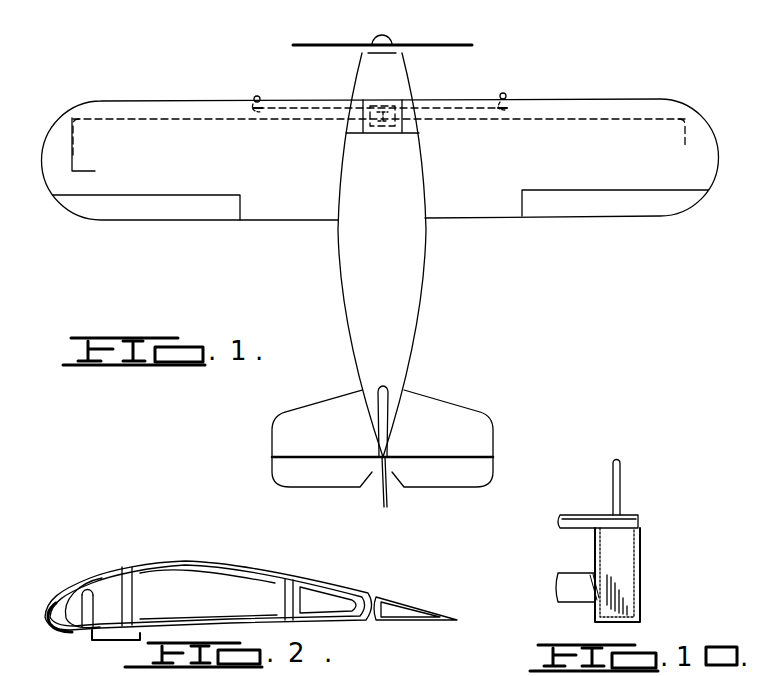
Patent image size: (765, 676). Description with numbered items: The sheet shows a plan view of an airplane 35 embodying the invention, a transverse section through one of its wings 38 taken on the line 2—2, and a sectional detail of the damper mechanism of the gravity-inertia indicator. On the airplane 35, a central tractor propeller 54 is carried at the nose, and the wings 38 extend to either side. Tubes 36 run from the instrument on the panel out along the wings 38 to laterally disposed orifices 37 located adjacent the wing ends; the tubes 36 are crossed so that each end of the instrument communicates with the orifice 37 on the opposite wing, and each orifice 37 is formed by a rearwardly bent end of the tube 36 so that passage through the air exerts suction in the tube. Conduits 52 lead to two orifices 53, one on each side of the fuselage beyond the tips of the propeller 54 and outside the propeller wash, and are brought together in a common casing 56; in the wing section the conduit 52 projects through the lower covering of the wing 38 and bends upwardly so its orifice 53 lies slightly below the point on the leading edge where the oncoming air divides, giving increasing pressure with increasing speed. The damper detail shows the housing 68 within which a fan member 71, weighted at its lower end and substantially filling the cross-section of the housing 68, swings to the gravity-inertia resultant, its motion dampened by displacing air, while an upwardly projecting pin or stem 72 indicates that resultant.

In FIG. 1, the section line 2— 2 is at (217, 63).
In FIG. 1, the airplane 35 is at (382, 280).
In FIG. 1, the tubes 36 is at (215, 124).
In FIG. 2, the tubes 36 is at (102, 580).
In FIG. 1, the orifices 37 is at (82, 157).
In FIG. 2, the orifices 37 is at (137, 640).
In FIG. 1, the wings 38 is at (380, 159).
In FIG. 2, the wings 38 is at (178, 562).
In FIG. 1, the conduits 52 is at (312, 107).
In FIG. 2, the conduits 52 is at (83, 583).
In FIG. 1, the orifice 53 is at (262, 97).
In FIG. 2, the orifice 53 is at (46, 612).
In FIG. 1, the propeller 54 is at (428, 47).
In FIG. 1, the common casing 56 is at (383, 104).
In FIG. 10, the housing 68 is at (642, 560).
In FIG. 10, the fan member 71 is at (619, 580).
In FIG. 10, the pin or stem 72 is at (621, 483).